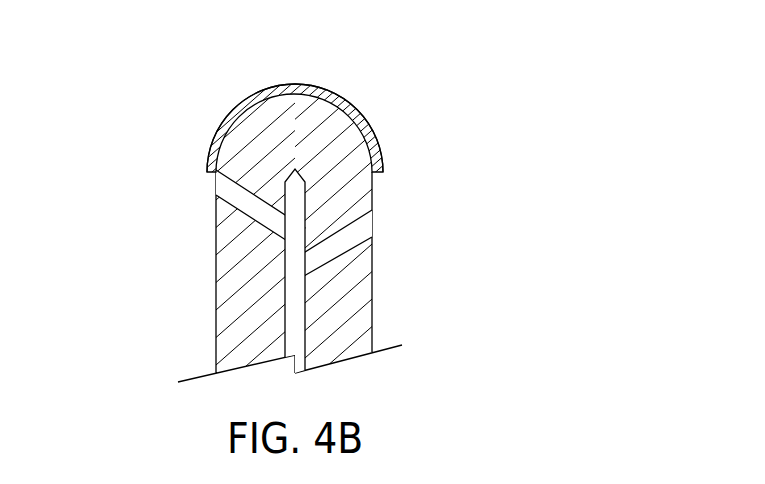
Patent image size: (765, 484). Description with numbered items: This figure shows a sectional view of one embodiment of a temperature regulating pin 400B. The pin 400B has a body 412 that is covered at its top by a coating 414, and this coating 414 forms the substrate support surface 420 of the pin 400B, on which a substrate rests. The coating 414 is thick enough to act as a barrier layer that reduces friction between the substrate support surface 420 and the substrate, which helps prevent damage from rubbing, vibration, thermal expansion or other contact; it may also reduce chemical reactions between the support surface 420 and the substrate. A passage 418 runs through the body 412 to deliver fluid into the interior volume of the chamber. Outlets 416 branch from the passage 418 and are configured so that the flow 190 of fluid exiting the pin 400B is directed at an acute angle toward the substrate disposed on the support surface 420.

The pin 400B is at (347, 242).
The body 412 is at (238, 278).
The coating 414 is at (358, 113).
The outlets 416 is at (370, 228).
The passage 418 is at (292, 335).
The substrate support surface 420 is at (315, 85).
The flow 190 is at (198, 178).